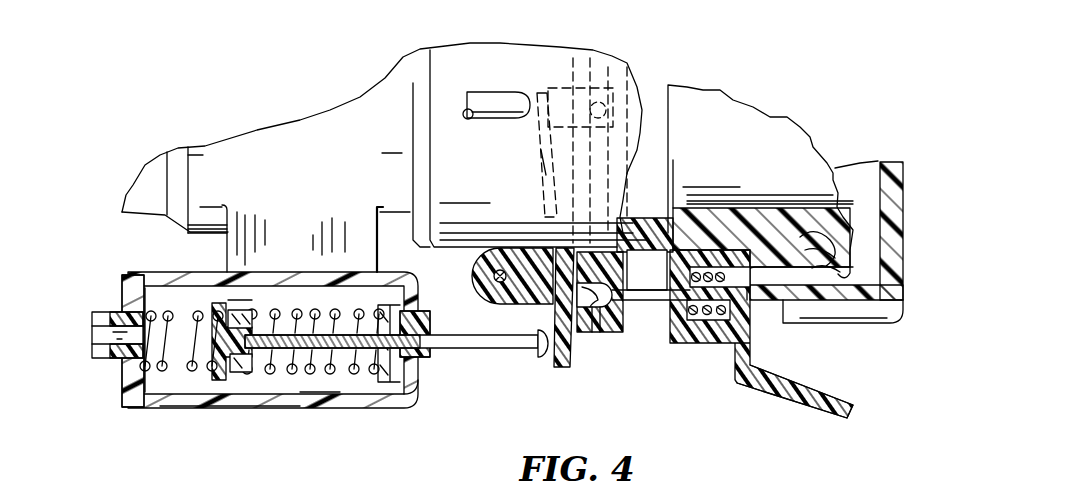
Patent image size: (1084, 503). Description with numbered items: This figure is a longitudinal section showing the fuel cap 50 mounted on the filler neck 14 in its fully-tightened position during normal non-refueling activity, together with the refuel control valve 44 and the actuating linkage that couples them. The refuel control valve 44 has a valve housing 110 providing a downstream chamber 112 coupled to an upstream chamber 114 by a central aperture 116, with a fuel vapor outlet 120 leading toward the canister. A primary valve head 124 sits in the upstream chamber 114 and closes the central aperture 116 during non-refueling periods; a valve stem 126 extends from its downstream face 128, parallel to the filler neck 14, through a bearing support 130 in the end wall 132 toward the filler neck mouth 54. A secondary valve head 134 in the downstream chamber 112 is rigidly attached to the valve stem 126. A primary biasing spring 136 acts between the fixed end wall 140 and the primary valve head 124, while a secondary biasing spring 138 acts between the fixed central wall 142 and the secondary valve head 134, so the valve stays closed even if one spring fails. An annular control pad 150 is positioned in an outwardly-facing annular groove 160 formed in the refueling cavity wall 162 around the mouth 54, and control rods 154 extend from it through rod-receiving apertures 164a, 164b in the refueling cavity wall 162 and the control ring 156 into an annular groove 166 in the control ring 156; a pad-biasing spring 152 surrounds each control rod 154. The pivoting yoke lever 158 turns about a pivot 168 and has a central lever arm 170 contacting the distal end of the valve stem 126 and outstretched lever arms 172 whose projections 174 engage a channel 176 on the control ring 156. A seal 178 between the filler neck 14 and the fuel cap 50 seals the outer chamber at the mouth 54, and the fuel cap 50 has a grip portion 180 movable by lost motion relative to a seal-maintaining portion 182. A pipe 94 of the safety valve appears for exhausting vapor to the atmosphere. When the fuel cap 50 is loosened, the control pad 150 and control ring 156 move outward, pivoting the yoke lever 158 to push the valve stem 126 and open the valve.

The filler neck 14 is at (303, 128).
The refuel control valve 44 is at (218, 410).
The fuel cap 50 is at (862, 310).
The filler neck mouth 54 is at (813, 268).
The pipe 94 is at (485, 98).
The valve housing 110 is at (348, 408).
The downstream chamber 112 is at (343, 297).
The upstream chamber 114 is at (188, 300).
The central aperture 116 is at (258, 358).
The fuel vapor outlet 120 is at (100, 312).
The primary valve head 124 is at (204, 381).
The valve stem 126 is at (496, 345).
The downstream face 128 is at (232, 313).
The bearing support 130 is at (411, 322).
The end wall 132 is at (421, 396).
The secondary valve head 134 is at (388, 390).
The primary biasing spring 136 is at (170, 357).
The secondary biasing spring 138 is at (318, 383).
The fixed end wall 140 is at (122, 375).
The fixed central wall 142 is at (245, 300).
The annular control pad 150 is at (750, 303).
The pad-biasing spring 152 is at (748, 302).
The control rod 154 is at (645, 297).
The control ring 156 is at (621, 72).
The pivoting yoke lever 158 is at (533, 163).
The annular groove 160 is at (708, 315).
The refueling cavity wall 162 is at (837, 398).
The rod-receiving aperture 164a is at (641, 302).
The rod-receiving aperture 164b is at (640, 305).
The annular groove 166 is at (596, 312).
The pivot 168 is at (503, 253).
The central lever arm 170 is at (566, 368).
The lever arm 172 is at (540, 146).
The projection 174 is at (558, 88).
The channel 176 is at (597, 312).
The seal 178 is at (850, 277).
The grip portion 180 is at (895, 313).
The seal-maintaining portion 182 is at (767, 213).